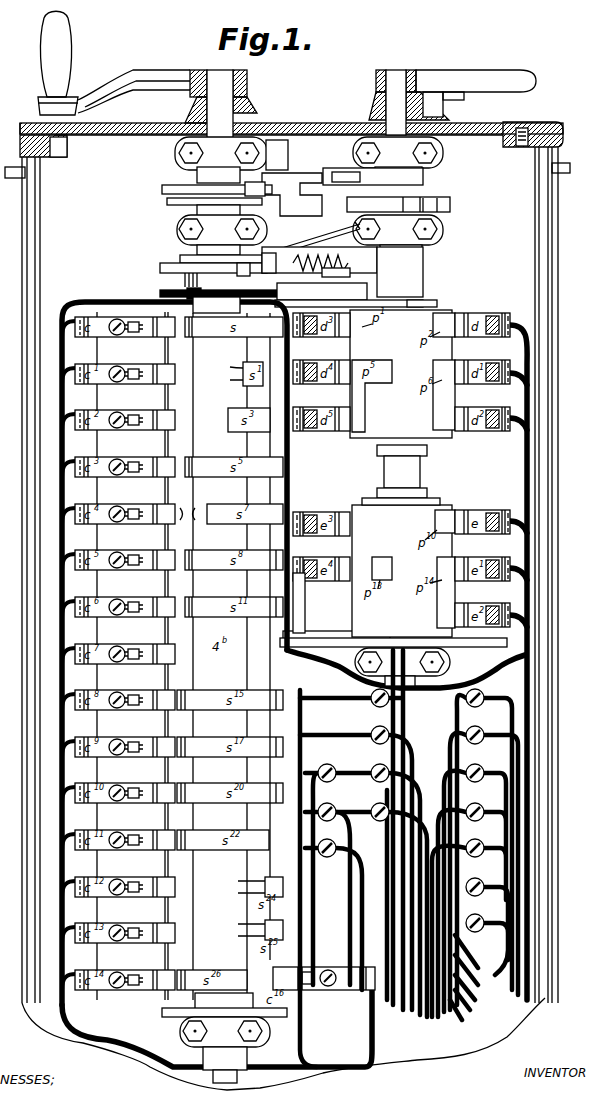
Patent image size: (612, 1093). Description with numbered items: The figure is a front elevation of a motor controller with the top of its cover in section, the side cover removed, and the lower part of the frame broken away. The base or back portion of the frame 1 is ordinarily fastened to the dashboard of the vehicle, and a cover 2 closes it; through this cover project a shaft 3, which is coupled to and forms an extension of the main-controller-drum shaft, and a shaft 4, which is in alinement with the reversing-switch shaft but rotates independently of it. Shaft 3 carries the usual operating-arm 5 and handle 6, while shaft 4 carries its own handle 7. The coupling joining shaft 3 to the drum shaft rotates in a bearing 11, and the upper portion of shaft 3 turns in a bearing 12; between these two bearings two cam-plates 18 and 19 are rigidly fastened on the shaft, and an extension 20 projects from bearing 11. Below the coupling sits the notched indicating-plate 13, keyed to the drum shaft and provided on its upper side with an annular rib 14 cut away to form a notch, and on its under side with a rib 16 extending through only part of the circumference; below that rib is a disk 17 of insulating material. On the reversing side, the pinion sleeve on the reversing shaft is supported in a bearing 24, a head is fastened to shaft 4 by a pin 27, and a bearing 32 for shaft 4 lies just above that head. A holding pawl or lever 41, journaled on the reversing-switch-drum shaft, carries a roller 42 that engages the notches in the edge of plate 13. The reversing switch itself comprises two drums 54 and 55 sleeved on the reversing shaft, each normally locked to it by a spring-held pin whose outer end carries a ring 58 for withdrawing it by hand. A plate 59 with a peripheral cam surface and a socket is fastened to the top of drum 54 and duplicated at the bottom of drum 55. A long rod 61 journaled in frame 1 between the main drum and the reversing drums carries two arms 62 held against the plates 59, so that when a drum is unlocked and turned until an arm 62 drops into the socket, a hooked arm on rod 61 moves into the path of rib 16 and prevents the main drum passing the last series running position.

The base or back portion of the frame 1 is at (287, 618).
The cover 2 is at (310, 122).
The shaft 3 is at (221, 105).
The shaft 4 is at (416, 102).
The operating-arm 5 is at (150, 72).
The handle 6 is at (58, 63).
The handle 7 is at (476, 81).
The bearing 11 is at (222, 230).
The bearing 12 is at (221, 153).
The notched indicating-plate 13 is at (160, 268).
The annular rib 14 is at (180, 258).
The rib 16 is at (185, 283).
The disk of insulating material 17 is at (160, 292).
The cam-plate 18 is at (164, 185).
The cam-plate 19 is at (167, 204).
The extension 20 is at (288, 240).
The bearing 24 is at (398, 230).
The pin 27 is at (292, 178).
The bearing 32 is at (398, 152).
The holding pawl or lever 41 is at (365, 276).
The roller 42 is at (240, 276).
The reversing-switch drum 54 is at (401, 374).
The reversing-switch drum 55 is at (402, 571).
The ring 58 is at (425, 456).
The plate 59 is at (413, 300).
The long rod 61 is at (305, 605).
The arm 62 is at (349, 462).